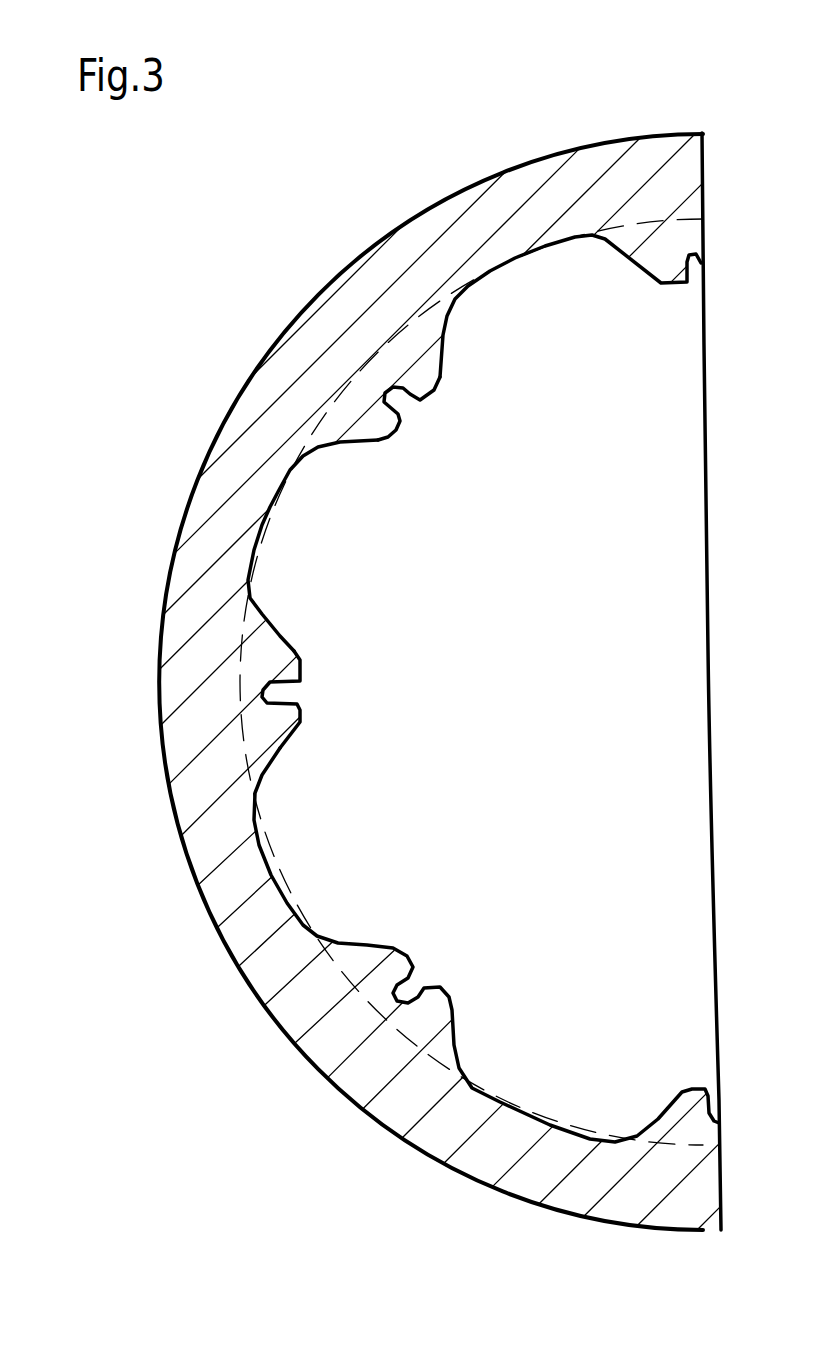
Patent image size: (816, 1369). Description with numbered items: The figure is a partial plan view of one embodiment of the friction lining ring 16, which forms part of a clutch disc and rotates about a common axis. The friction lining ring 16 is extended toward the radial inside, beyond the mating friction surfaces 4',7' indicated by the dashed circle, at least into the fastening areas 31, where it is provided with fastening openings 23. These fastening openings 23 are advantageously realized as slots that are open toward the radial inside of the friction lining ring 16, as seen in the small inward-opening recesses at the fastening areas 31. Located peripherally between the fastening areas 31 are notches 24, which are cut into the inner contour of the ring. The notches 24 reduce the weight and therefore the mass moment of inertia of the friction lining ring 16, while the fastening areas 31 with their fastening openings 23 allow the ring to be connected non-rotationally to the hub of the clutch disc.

The friction lining ring 16 is at (522, 140).
The fastening openings 23 is at (403, 403).
The fastening areas 31 is at (309, 712).
The notches 24 is at (287, 883).
The mating friction surfaces 4',7' is at (440, 702).